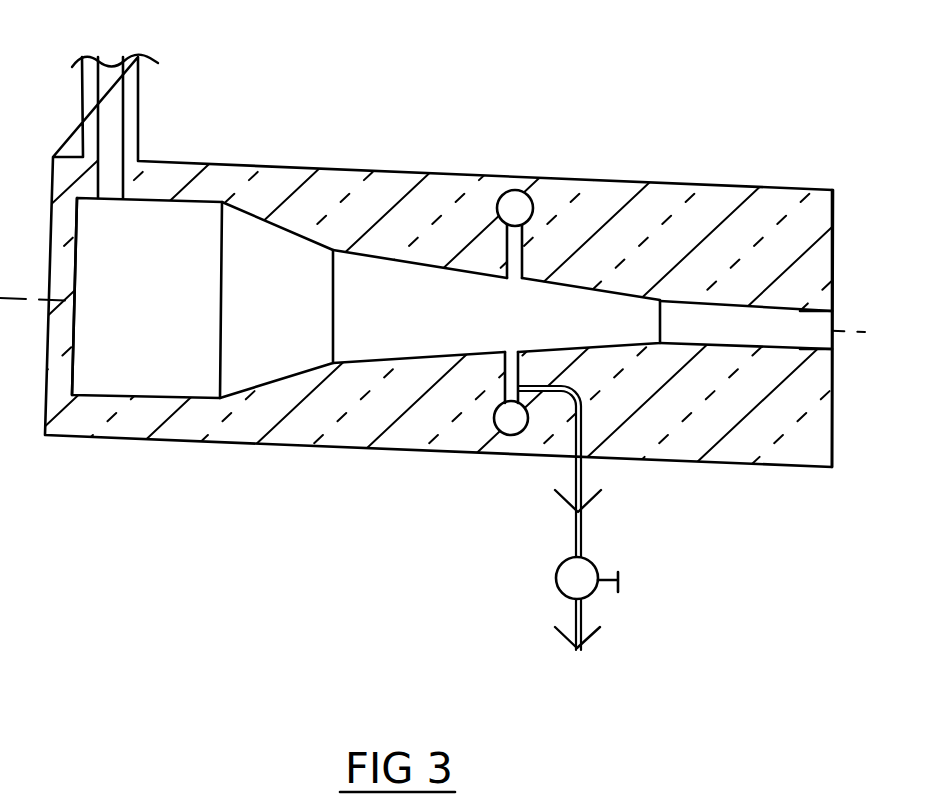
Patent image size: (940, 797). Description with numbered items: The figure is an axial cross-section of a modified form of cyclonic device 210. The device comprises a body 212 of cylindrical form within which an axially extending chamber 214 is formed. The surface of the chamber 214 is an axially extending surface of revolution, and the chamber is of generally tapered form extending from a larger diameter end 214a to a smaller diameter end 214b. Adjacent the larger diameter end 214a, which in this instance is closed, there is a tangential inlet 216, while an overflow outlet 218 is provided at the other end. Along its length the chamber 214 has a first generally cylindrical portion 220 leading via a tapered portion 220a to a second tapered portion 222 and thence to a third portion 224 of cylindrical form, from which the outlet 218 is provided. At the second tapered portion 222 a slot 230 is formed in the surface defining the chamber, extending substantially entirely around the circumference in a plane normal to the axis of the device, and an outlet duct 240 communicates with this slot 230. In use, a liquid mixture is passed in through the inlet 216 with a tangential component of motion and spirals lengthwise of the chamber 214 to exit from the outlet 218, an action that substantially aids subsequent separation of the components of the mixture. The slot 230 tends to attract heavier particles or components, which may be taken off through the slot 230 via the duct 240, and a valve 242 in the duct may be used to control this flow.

The cyclonic device 210 is at (333, 503).
The body 212 is at (415, 413).
The chamber 214 is at (273, 330).
The larger diameter end 214a is at (95, 377).
The smaller diameter end 214b is at (790, 333).
The tangential inlet 216 is at (107, 126).
The overflow outlet 218 is at (813, 335).
The first generally cylindrical portion 220 is at (177, 213).
The tapered portion 220a is at (277, 248).
The second tapered portion 222 is at (417, 280).
The third portion 224 is at (732, 320).
The slot 230 is at (477, 265).
The outlet duct 240 is at (582, 533).
The valve 242 is at (565, 585).